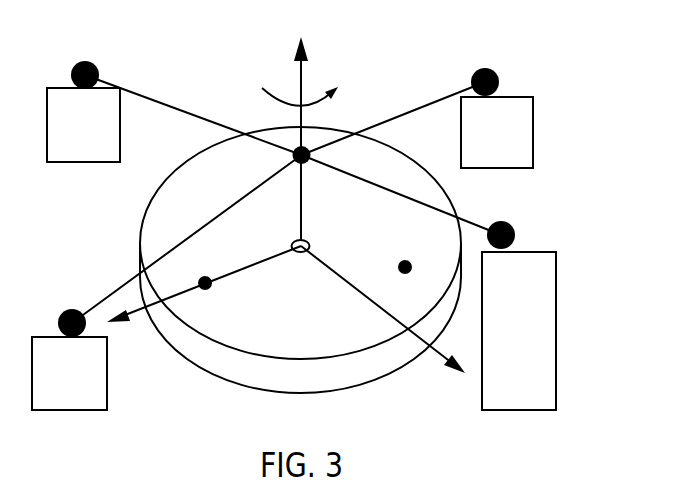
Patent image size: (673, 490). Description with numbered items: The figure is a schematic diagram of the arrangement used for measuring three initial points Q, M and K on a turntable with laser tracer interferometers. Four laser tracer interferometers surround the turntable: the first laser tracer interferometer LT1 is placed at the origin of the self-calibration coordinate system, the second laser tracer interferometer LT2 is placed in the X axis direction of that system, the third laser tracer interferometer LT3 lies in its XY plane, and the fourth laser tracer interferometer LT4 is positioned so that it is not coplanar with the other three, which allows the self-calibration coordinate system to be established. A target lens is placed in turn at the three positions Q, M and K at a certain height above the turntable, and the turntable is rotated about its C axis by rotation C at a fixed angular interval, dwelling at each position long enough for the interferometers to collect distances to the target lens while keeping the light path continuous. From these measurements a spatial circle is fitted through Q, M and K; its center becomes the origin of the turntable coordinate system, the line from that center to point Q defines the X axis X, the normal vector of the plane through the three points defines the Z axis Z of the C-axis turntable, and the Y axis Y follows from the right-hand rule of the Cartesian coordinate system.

The first laser tracer interferometer LT1 is at (174, 96).
The second laser tracer interferometer LT2 is at (167, 282).
The third laser tracer interferometer LT3 is at (418, 99).
The fourth laser tracer interferometer LT4 is at (429, 282).
The point M is at (314, 175).
The point Q is at (216, 296).
The point K is at (396, 282).
The X axis X is at (204, 299).
The Y axis Y is at (383, 319).
The Z axis Z is at (283, 139).
The C-axis rotation C is at (315, 95).